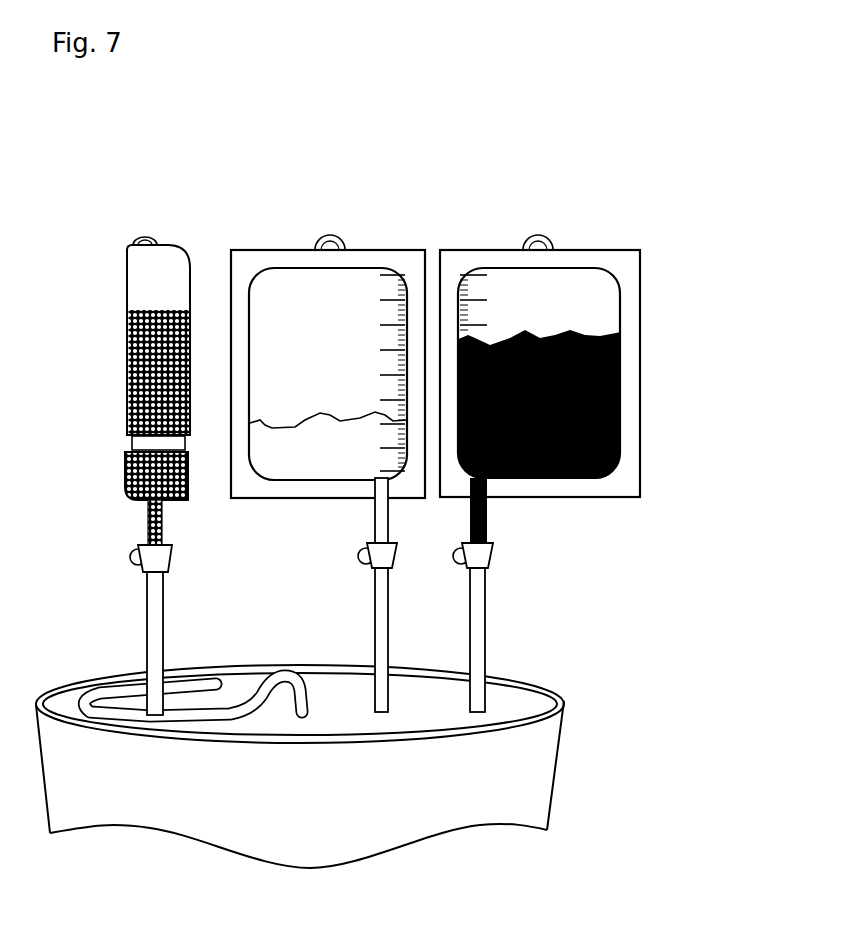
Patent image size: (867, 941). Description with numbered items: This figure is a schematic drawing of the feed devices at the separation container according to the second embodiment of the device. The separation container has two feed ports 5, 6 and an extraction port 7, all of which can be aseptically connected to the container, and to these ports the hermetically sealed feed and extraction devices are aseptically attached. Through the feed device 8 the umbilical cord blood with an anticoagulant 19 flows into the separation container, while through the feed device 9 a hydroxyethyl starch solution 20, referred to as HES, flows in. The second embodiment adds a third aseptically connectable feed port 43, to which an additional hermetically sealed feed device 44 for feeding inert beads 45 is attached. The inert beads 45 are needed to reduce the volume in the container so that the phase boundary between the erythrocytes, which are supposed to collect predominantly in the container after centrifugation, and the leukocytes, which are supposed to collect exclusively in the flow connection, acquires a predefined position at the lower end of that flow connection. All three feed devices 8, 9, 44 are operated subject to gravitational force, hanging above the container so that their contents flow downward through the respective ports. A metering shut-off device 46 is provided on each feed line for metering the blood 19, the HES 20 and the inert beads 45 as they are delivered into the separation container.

The feed device 44 is at (164, 214).
The inert beads 45 is at (127, 384).
The metering shut-off device 46 is at (138, 557).
The feed port 43 is at (155, 648).
The extraction port 7 is at (208, 681).
The feed device 9 is at (328, 389).
The hydroxyethyl starch solution 20 is at (305, 462).
The feed port 6 is at (380, 618).
The feed device 8 is at (558, 211).
The umbilical cord blood with anticoagulant 19 is at (620, 417).
The feed port 5 is at (485, 620).